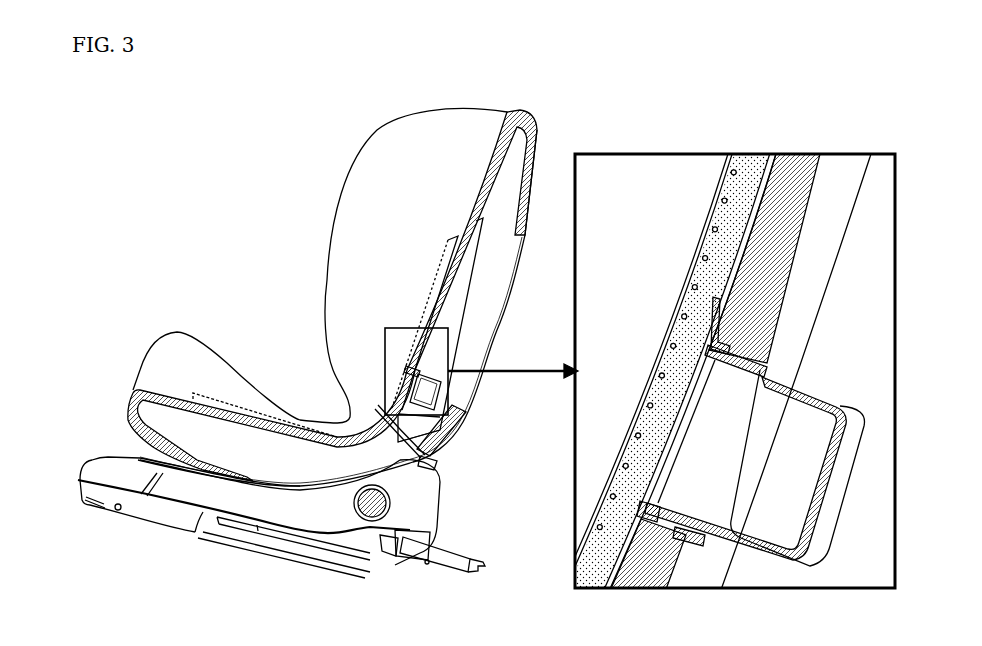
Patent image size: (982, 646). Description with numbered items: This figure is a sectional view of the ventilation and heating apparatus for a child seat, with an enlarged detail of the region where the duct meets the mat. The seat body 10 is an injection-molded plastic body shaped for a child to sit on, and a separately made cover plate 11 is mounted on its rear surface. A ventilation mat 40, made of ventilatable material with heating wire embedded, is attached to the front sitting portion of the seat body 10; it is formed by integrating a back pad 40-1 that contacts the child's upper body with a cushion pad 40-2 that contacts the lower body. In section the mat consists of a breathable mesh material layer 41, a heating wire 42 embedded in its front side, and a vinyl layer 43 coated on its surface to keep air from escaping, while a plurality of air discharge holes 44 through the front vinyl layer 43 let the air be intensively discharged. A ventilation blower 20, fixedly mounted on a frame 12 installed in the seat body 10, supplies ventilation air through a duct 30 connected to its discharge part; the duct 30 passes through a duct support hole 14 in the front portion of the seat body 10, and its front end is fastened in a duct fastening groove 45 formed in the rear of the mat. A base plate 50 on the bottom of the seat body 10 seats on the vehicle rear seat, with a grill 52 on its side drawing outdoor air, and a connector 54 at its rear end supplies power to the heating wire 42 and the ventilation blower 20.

The seat body 10 is at (366, 133).
The cover plate 11 is at (483, 382).
The frame 12 is at (480, 250).
The duct support hole 14 is at (733, 365).
The ventilation blower 20 is at (420, 425).
The duct 30 is at (740, 438).
The ventilation mat 40 is at (424, 276).
The back pad 40-1 is at (443, 255).
The cushion pad 40-2 is at (210, 403).
The mesh material layer 41 is at (757, 193).
The heating wire 42 is at (734, 169).
The vinyl layer 43 is at (722, 180).
The air discharge holes 44 is at (708, 221).
The duct fastening groove 45 is at (719, 303).
The base plate 50 is at (279, 510).
The grill 52 is at (363, 513).
The connector 54 is at (480, 565).